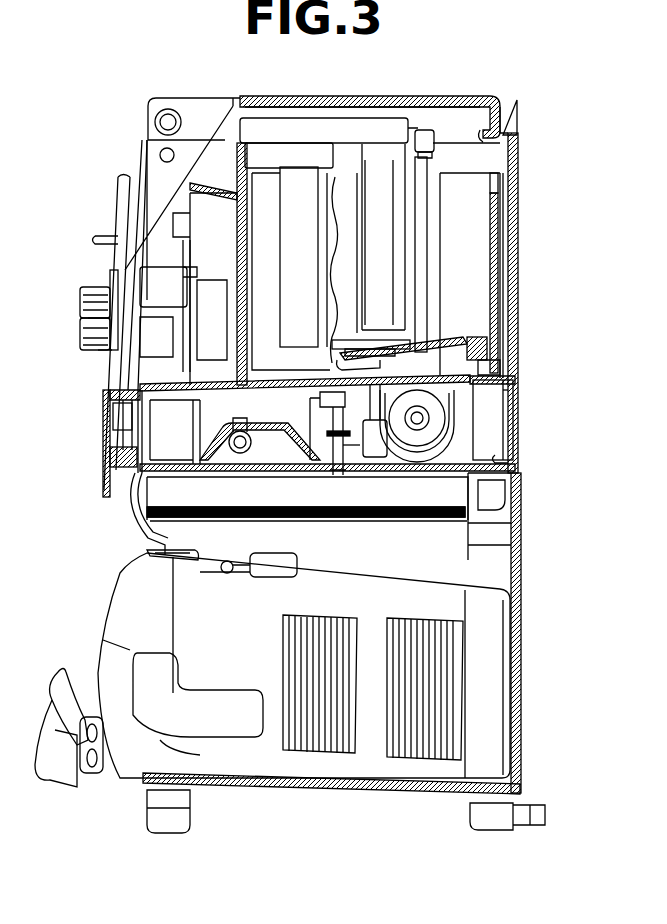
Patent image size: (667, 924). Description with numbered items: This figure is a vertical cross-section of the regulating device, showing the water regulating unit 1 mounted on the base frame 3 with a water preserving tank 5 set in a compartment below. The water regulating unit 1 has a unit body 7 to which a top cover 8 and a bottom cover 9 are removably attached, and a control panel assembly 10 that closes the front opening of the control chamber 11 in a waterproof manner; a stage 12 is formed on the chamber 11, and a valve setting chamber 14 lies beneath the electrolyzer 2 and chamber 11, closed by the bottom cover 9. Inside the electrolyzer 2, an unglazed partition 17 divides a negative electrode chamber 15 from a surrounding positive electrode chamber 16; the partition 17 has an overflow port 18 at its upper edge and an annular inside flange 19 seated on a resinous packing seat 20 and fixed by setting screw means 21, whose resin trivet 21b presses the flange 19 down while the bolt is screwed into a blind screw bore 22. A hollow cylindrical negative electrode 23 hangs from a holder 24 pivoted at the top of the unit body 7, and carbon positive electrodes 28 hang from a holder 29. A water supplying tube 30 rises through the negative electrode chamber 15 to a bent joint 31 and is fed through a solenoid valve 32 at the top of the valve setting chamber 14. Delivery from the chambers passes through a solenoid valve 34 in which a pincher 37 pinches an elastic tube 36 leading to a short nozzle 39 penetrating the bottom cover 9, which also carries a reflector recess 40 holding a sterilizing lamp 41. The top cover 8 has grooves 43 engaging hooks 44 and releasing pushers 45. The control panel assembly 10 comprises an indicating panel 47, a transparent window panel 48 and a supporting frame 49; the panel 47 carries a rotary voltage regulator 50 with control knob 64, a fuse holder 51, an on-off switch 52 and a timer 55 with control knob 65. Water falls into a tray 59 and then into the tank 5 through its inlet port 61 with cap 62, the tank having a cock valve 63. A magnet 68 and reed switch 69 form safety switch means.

The water regulating unit 1 is at (528, 305).
The electrolyzer 2 is at (520, 214).
The base frame 3 is at (520, 522).
The water preserving tank 5 is at (440, 603).
The unit body 7 is at (518, 404).
The top cover 8 is at (372, 96).
The bottom cover 9 is at (503, 455).
The control panel assembly 10 is at (112, 258).
The control chamber 11 is at (217, 231).
The stage 12 is at (213, 180).
The valve setting chamber 14 is at (275, 383).
The negative electrode chamber 15 is at (470, 274).
The positive electrode chamber 16 is at (505, 258).
The unglazed partition 17 is at (493, 250).
The overflow port 18 is at (490, 192).
The annular inside flange 19 is at (500, 360).
The resinous packing seat 20 is at (493, 420).
The setting screw means 21 is at (378, 339).
The resin trivet 21b is at (468, 342).
The blind screw bore 22 is at (376, 421).
The negative electrode 23 is at (370, 299).
The holder 24 is at (330, 118).
The positive electrodes 28 is at (290, 266).
The holder 29 is at (290, 160).
The water supplying tube 30 is at (420, 228).
The bent joint 31 is at (447, 132).
The solenoid valve 32 is at (417, 445).
The solenoid valve 34 is at (323, 418).
The elastic tube 36 is at (350, 447).
The pincher 37 is at (325, 437).
The short nozzle 39 is at (340, 471).
The lower opened recess 40 is at (282, 457).
The sterilizing lamp 41 is at (240, 454).
The grooves 43 is at (488, 141).
The hooks 44 is at (512, 118).
The releasing pushers 45 is at (152, 126).
The indicating panel 47 is at (137, 237).
The transparent window panel 48 is at (122, 197).
The supporting frame 49 is at (192, 262).
The rotary voltage regulator 50 is at (100, 363).
The fuse holder 51 is at (110, 278).
The on-off switch 52 is at (95, 238).
The timer 55 is at (88, 315).
The tray 59 is at (152, 492).
The inlet port 61 is at (183, 565).
The cap 62 is at (285, 555).
The cock valve 63 is at (68, 788).
The control knob 64 is at (82, 336).
The control knob 65 is at (82, 301).
The magnet 68 is at (108, 453).
The reed switch 69 is at (105, 413).